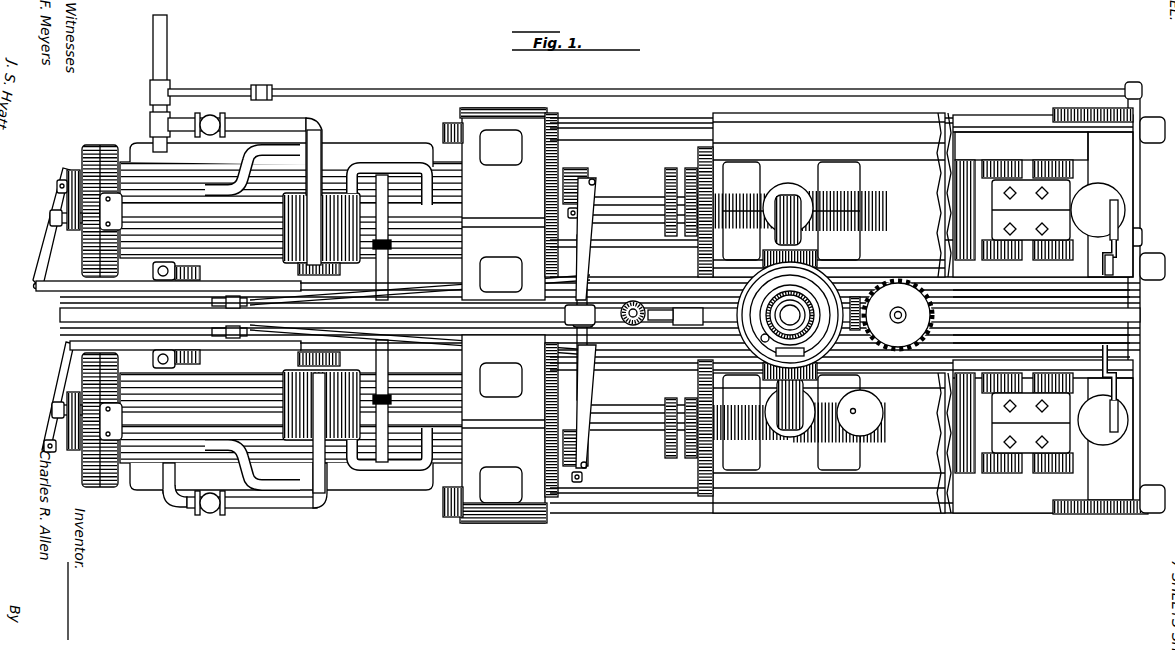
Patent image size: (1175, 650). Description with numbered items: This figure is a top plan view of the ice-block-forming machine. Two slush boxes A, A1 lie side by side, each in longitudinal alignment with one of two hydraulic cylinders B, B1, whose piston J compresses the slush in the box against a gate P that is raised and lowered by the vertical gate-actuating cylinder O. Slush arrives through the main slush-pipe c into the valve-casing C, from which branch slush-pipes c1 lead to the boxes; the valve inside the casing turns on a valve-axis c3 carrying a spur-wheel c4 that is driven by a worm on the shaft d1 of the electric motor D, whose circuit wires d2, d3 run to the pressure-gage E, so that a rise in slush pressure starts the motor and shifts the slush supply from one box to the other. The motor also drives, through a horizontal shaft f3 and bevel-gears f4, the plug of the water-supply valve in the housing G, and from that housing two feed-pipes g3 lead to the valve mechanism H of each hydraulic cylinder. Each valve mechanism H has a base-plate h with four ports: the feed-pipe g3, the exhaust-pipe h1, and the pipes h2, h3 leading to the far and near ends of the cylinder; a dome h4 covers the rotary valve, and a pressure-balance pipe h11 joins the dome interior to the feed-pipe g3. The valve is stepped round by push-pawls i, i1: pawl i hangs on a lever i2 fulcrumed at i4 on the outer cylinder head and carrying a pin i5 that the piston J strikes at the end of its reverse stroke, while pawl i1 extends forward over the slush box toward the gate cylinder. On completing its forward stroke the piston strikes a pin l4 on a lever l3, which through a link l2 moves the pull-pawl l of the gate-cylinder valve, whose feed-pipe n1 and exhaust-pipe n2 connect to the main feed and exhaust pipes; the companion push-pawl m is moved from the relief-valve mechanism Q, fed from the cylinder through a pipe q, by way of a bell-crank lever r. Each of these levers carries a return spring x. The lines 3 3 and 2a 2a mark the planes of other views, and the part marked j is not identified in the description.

The valve mechanism H is at (312, 316).
The hydraulic cylinder B is at (415, 133).
The hydraulic cylinder B1 is at (413, 480).
The dome h4 is at (327, 205).
The exhaust-pipe h1 is at (240, 530).
The pipe to outer end of cylinder h2 is at (252, 475).
The pipe to inner end of cylinder h3 is at (372, 480).
The base-plate h is at (295, 178).
The pressure-balance pipe h11 is at (392, 247).
The feed-pipe g3 is at (600, 305).
The exhaust-pipe n2 is at (856, 90).
The lever i2 is at (55, 382).
The fulcrum i4 is at (52, 410).
The pin i5 is at (72, 178).
The spring x is at (57, 187).
The push-pawl i is at (110, 287).
The line 3 3 is at (300, 315).
The relief-valve mechanism Q is at (600, 315).
The bell-crank lever r is at (220, 302).
The pipe q is at (167, 282).
The push-pawl i1 is at (460, 285).
The piston J is at (503, 180).
The slush-box A is at (878, 140).
The slush-box A1 is at (890, 480).
The branch slush-pipes c1 is at (788, 195).
The circuit-wire d2 is at (775, 415).
The circuit-wire d3 is at (818, 440).
The electric motor D is at (882, 405).
The pressure-gage E is at (838, 326).
The main slush-pipe c is at (780, 311).
The valve-axis c3 is at (856, 295).
The spur-wheel c4 is at (880, 315).
The motor shaft d1 is at (895, 323).
The shaft j is at (640, 197).
The pin l4 is at (580, 178).
The lever l3 is at (592, 198).
The link l2 is at (683, 282).
The bevel-gears f4 is at (634, 301).
The horizontal shaft f3 is at (662, 308).
The housing G is at (618, 330).
The valve-casing C is at (735, 340).
The gate P is at (1100, 460).
The feed-pipe n1 is at (1020, 252).
The gate-actuating cylinder O is at (1105, 205).
The push-pawl m is at (1108, 212).
The pull-pawl l is at (968, 335).
The line 2a 2a is at (1150, 315).